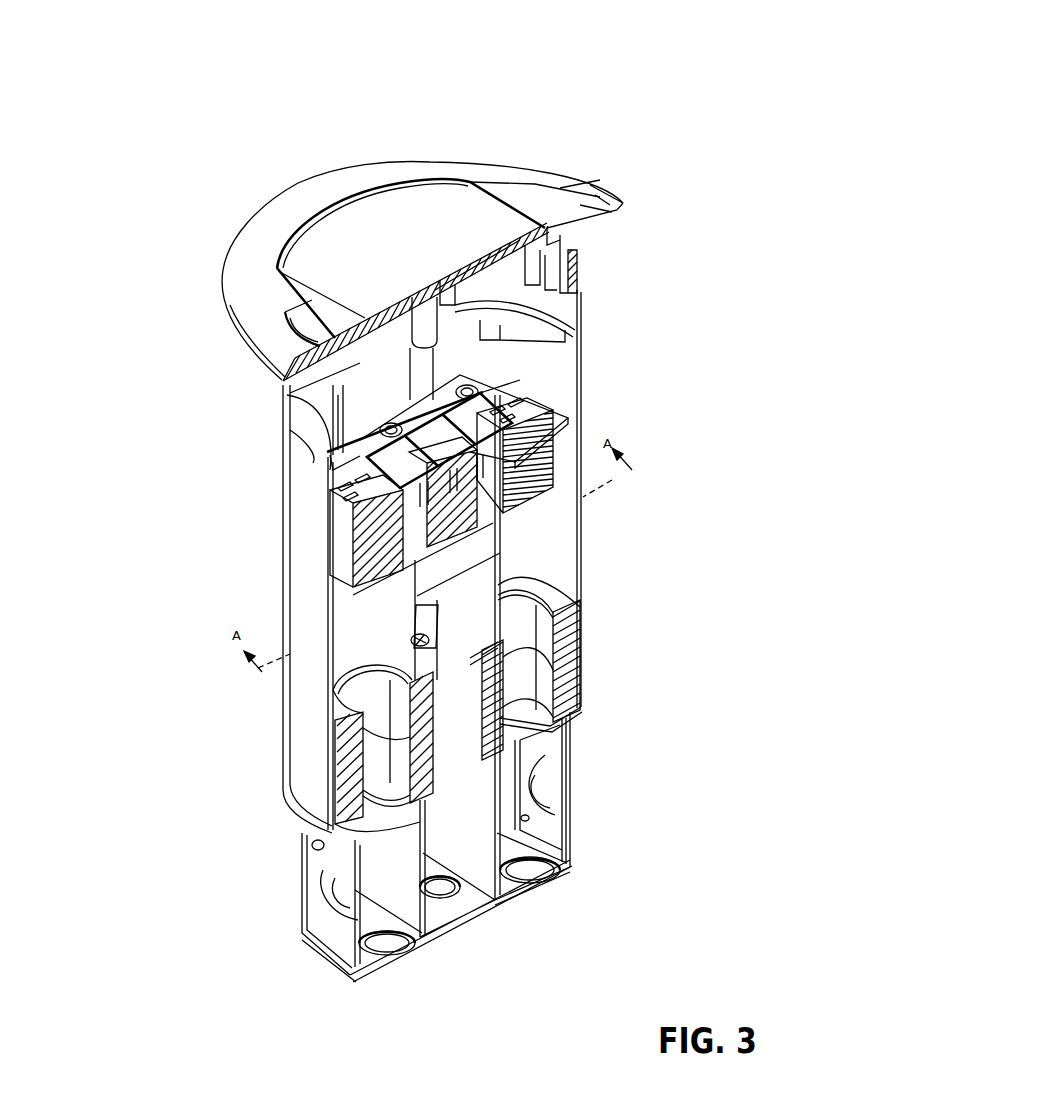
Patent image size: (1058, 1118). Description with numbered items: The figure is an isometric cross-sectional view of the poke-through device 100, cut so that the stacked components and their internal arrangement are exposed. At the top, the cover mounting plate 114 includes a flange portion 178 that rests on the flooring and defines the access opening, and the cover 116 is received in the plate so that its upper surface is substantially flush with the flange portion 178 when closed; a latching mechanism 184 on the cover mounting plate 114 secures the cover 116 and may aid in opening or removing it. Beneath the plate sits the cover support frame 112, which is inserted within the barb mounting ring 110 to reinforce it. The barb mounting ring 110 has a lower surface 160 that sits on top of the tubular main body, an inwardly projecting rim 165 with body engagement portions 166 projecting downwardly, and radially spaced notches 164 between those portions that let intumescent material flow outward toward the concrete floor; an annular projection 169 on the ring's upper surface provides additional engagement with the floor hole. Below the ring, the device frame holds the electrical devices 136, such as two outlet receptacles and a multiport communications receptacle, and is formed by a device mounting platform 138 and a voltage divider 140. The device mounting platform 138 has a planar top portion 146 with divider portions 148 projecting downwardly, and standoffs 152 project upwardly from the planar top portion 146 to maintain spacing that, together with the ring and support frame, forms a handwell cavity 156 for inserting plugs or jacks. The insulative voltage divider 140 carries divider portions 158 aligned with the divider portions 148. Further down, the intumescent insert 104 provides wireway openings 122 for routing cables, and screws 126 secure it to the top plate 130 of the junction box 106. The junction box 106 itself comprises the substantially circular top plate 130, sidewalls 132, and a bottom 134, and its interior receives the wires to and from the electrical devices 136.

The poke-through device 100 is at (742, 96).
The intumescent insert 104 is at (565, 649).
The junction box 106 is at (585, 775).
The barb mounting ring 110 is at (293, 415).
The cover support frame 112 is at (308, 378).
The cover mounting plate 114 is at (305, 203).
The cover 116 is at (415, 210).
The wireway opening 122 is at (518, 629).
The screw 126 is at (412, 638).
The top plate 130 is at (300, 815).
The sidewall 132 is at (560, 810).
The bottom 134 is at (450, 923).
The electrical device 136 is at (387, 560).
The device mounting platform 138 is at (555, 386).
The voltage divider 140 is at (505, 568).
The planar top portion 146 is at (345, 428).
The divider portion 148 is at (490, 487).
The standoff 152 is at (432, 371).
The handwell cavity 156 is at (460, 367).
The divider portion 158 is at (398, 592).
The lower surface 160 is at (296, 470).
The notch 164 is at (295, 449).
The inwardly projecting rim 165 is at (485, 335).
The body engagement portion 166 is at (543, 344).
The annular projection 169 is at (275, 402).
The flange portion 178 is at (245, 322).
The latching mechanism 184 is at (598, 195).